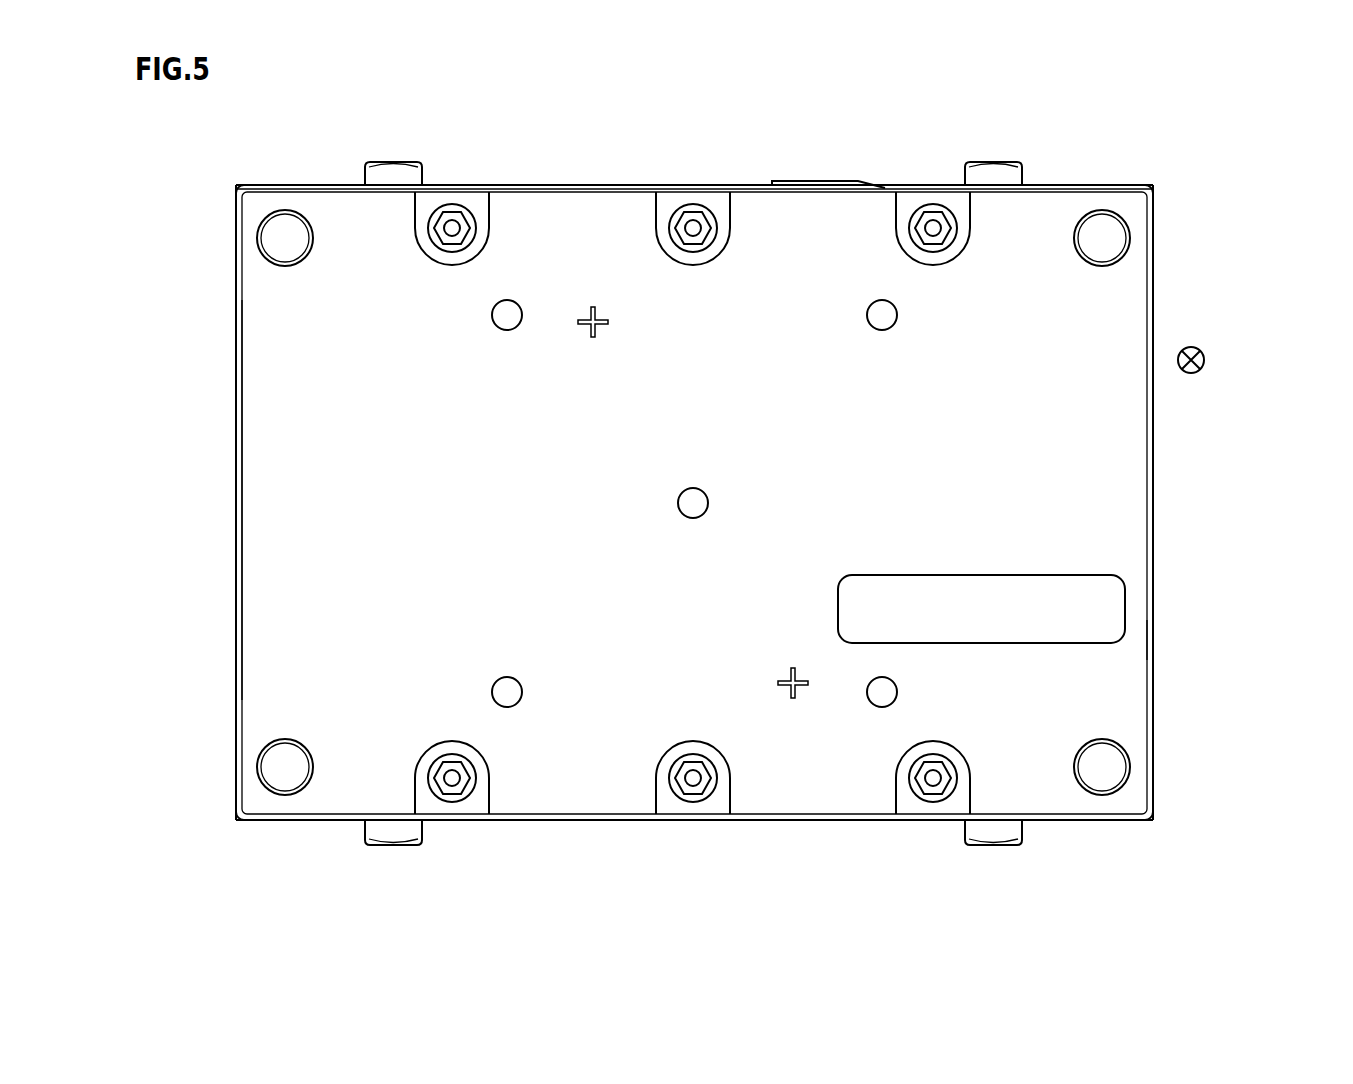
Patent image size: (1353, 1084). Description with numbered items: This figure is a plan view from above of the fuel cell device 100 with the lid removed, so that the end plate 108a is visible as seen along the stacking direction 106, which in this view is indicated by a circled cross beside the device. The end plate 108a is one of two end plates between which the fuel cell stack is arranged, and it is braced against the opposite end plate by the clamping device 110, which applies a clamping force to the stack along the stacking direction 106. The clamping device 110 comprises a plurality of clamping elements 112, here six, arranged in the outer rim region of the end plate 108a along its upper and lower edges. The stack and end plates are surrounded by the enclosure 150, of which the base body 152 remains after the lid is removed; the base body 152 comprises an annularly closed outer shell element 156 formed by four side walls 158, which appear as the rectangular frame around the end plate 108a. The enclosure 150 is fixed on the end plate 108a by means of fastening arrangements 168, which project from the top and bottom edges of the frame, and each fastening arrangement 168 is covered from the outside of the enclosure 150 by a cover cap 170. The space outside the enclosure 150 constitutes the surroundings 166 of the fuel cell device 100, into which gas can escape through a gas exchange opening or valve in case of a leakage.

The fuel cell device 100 is at (1170, 237).
The enclosure 150 is at (1170, 302).
The stacking direction 106 is at (1205, 358).
The end plate 108a is at (1100, 464).
The clamping device 110 is at (449, 183).
The clamping elements 112 is at (479, 184).
The base body 152 is at (1153, 573).
The outer shell element 156 is at (1153, 638).
The side walls 158 is at (1153, 700).
The surroundings 166 is at (163, 515).
The fastening arrangement 168 is at (378, 140).
The cover cap 170 is at (403, 172).